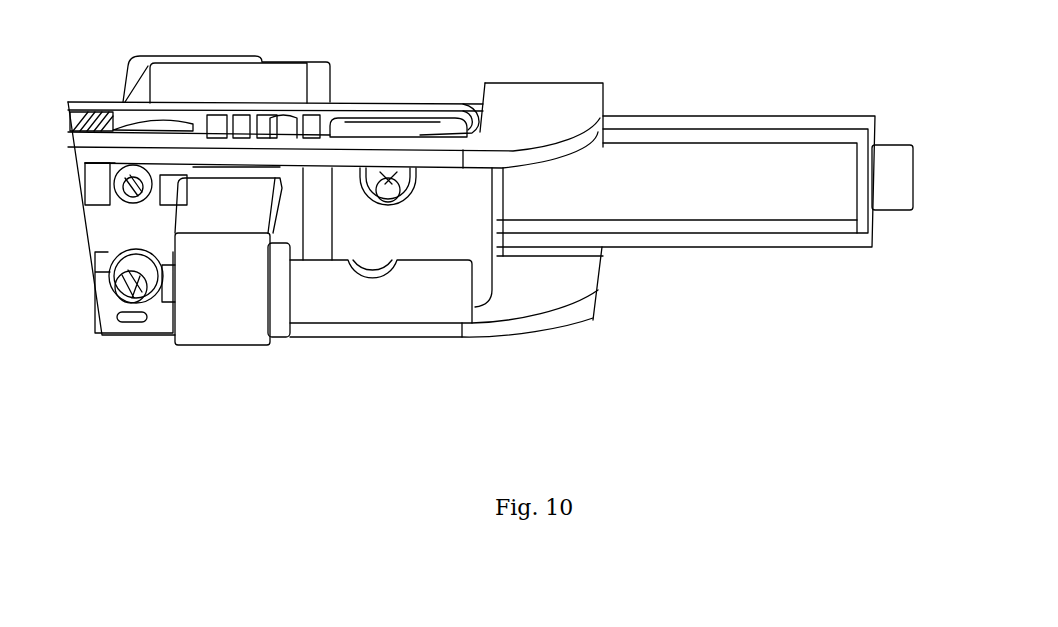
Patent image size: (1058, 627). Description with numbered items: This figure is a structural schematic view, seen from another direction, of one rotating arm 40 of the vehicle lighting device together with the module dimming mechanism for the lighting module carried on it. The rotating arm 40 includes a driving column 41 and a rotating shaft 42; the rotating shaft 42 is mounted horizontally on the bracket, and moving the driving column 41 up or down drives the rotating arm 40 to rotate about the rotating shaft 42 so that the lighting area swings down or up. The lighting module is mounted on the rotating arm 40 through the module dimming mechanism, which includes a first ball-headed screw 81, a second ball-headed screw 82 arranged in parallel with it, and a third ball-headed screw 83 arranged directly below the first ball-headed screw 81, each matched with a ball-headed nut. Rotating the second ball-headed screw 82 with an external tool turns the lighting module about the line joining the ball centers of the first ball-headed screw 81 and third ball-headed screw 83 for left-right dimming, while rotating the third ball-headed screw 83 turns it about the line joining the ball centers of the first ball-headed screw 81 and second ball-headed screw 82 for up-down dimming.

The rotating arm 40 is at (533, 113).
The driving column 41 is at (383, 307).
The rotating shaft 42 is at (887, 190).
The first ball-headed screw 81 is at (126, 188).
The second ball-headed screw 82 is at (393, 197).
The third ball-headed screw 83 is at (130, 300).